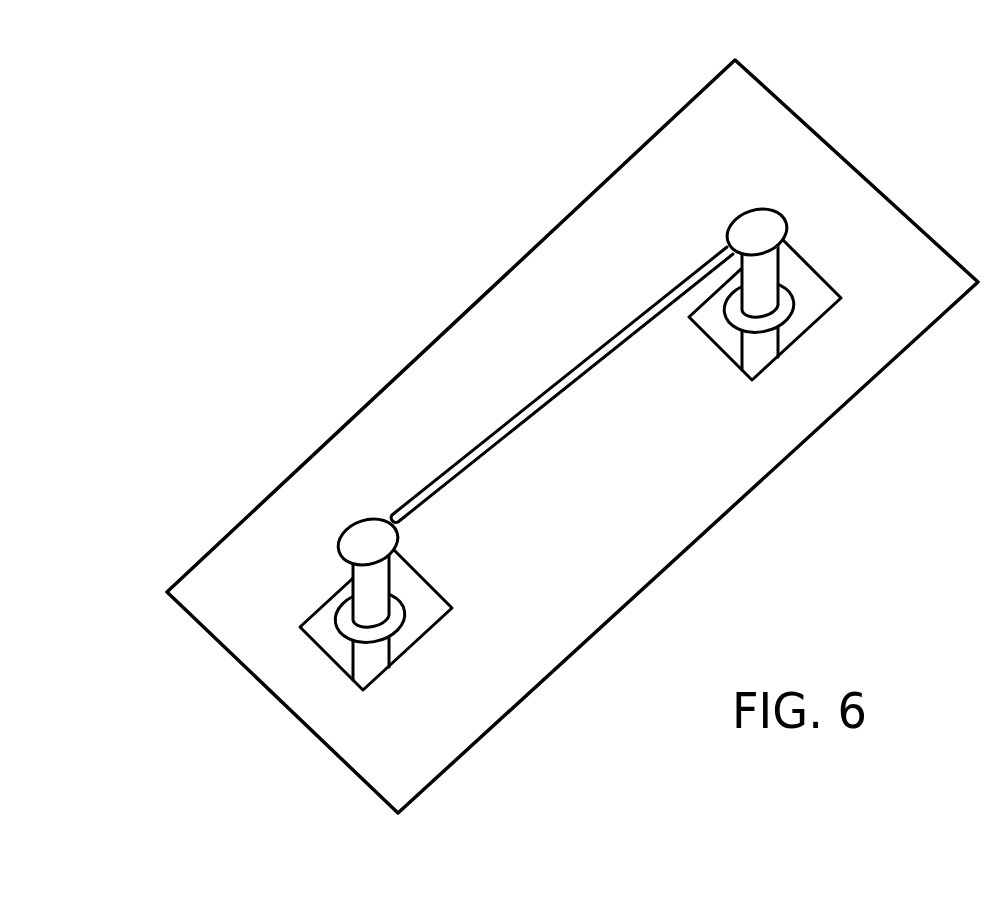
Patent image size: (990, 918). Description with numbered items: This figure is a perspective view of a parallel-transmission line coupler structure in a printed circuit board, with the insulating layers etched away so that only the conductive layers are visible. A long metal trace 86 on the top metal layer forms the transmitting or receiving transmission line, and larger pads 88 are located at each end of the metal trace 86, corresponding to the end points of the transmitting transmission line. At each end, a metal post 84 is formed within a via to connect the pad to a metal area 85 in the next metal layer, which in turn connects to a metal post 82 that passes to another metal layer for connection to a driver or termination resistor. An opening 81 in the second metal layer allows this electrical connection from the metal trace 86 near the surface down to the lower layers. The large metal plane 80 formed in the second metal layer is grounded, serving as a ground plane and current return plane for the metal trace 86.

The metal plane 80 is at (623, 517).
The opening 81 is at (338, 654).
The metal post 82 is at (363, 672).
The metal post 84 is at (380, 583).
The metal area 85 is at (338, 597).
The metal trace 86 is at (540, 405).
The pads 88 is at (355, 543).